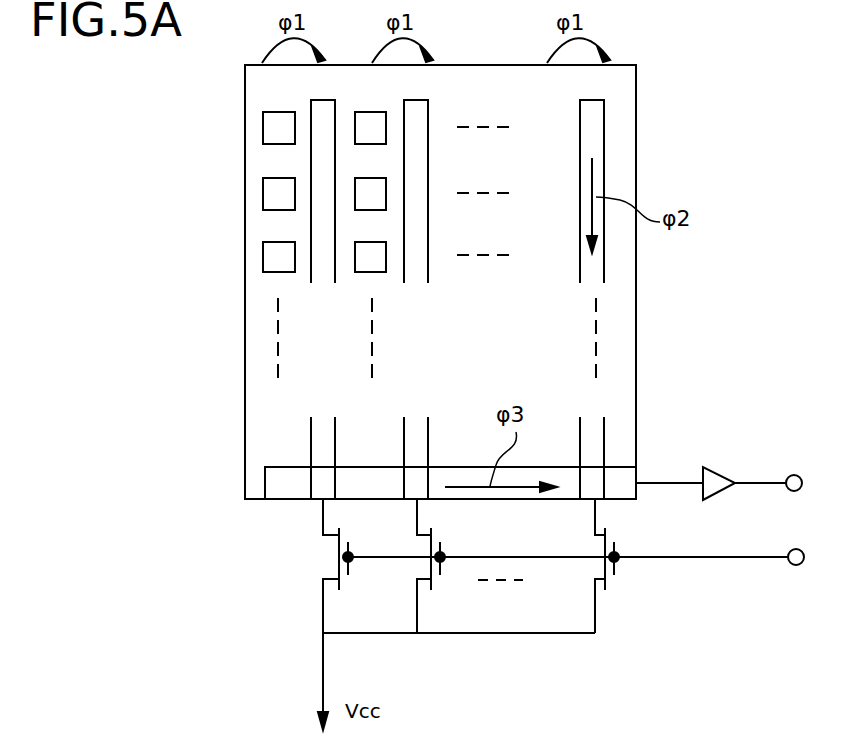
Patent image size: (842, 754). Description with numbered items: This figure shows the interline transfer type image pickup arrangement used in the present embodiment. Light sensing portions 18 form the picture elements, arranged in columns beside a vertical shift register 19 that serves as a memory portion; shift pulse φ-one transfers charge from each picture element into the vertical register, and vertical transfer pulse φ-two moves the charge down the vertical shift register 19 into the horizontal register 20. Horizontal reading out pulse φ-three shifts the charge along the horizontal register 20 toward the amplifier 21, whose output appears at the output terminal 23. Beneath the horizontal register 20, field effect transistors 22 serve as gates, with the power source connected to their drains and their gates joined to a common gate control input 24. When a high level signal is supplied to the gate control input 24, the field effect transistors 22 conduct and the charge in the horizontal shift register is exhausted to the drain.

The light sensing portion 18 is at (270, 130).
The vertical shift register 19 is at (596, 127).
The horizontal register 20 is at (322, 475).
The amplifier 21 is at (722, 468).
The field effect transistors 22 is at (323, 560).
The output terminal 23 is at (797, 474).
The gate control input 24 is at (798, 548).